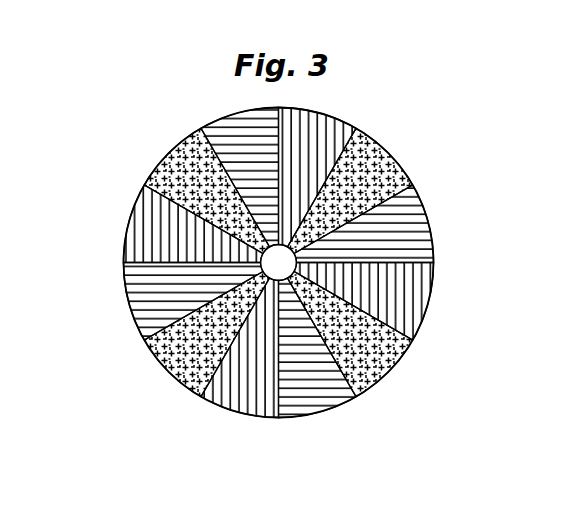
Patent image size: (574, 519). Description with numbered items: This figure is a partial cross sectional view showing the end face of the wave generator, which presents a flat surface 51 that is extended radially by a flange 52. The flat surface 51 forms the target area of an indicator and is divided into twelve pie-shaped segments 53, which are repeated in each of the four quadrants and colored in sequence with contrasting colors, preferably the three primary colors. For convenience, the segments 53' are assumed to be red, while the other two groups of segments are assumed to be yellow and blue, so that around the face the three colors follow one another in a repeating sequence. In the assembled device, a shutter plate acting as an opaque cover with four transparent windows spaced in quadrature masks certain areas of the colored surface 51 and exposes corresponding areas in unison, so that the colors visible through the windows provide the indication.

The flat surface 51 is at (383, 370).
The flange 52 is at (413, 313).
The segments 53 is at (175, 307).
The red segments 53' is at (252, 278).